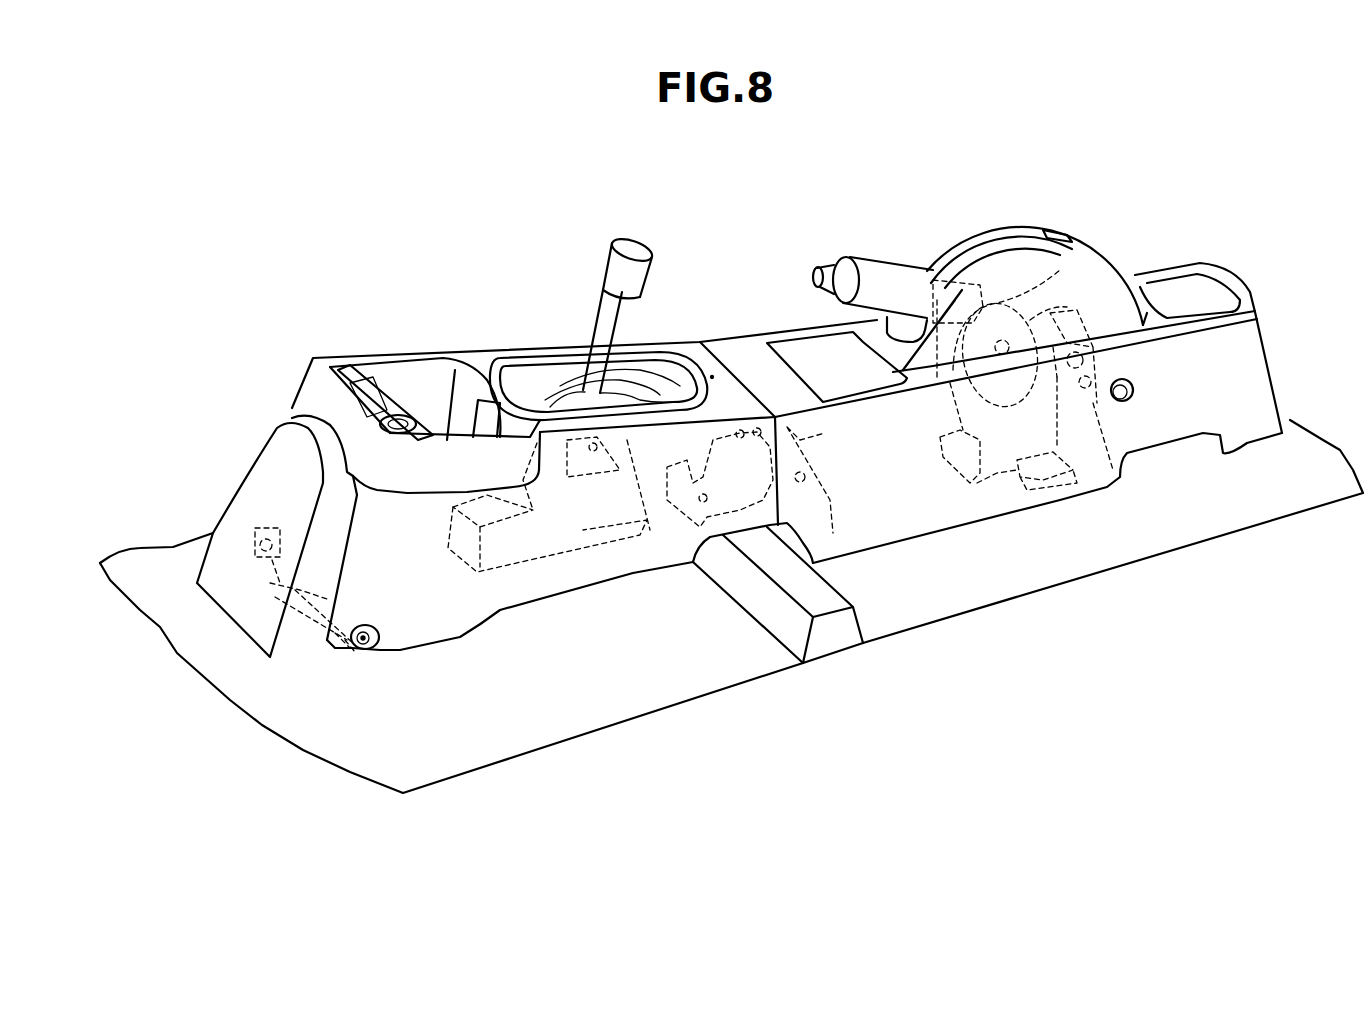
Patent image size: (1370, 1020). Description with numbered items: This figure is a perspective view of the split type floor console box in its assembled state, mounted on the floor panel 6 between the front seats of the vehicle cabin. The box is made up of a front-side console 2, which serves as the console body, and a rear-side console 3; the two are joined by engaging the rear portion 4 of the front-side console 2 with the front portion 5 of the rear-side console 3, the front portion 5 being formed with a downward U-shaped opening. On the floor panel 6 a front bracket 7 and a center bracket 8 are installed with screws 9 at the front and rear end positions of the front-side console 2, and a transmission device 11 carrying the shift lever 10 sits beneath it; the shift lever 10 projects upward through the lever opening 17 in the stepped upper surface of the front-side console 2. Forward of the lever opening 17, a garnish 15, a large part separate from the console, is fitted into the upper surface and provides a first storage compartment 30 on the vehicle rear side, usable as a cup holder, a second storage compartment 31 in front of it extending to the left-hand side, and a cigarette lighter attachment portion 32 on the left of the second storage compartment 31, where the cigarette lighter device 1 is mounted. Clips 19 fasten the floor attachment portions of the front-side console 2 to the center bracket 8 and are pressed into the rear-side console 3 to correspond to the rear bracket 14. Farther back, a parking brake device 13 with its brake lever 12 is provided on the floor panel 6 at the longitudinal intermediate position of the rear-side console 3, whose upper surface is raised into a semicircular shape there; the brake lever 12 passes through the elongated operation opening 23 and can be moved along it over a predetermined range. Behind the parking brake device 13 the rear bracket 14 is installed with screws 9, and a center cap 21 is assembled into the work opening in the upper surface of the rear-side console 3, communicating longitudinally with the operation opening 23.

The cigarette lighter device 1 is at (393, 413).
The front-side console 2 is at (240, 448).
The rear-side console 3 is at (1265, 328).
The rear portion 4 is at (688, 355).
The front portion 5 is at (727, 337).
The floor panel 6 is at (958, 600).
The front bracket 7 is at (270, 583).
The center bracket 8 is at (827, 500).
The screw 9 is at (370, 650).
The shift lever 10 is at (627, 280).
The transmission device 11 is at (583, 530).
The brake lever 12 is at (878, 273).
The parking brake device 13 is at (997, 480).
The rear bracket 14 is at (1100, 400).
The garnish 15 is at (430, 380).
The lever opening 17 is at (541, 390).
The clip 19 is at (1128, 398).
The center cap 21 is at (753, 350).
The operation opening 23 is at (1043, 235).
The first storage compartment 30 is at (467, 380).
The second storage compartment 31 is at (340, 362).
The cigarette lighter attachment portion 32 is at (447, 440).